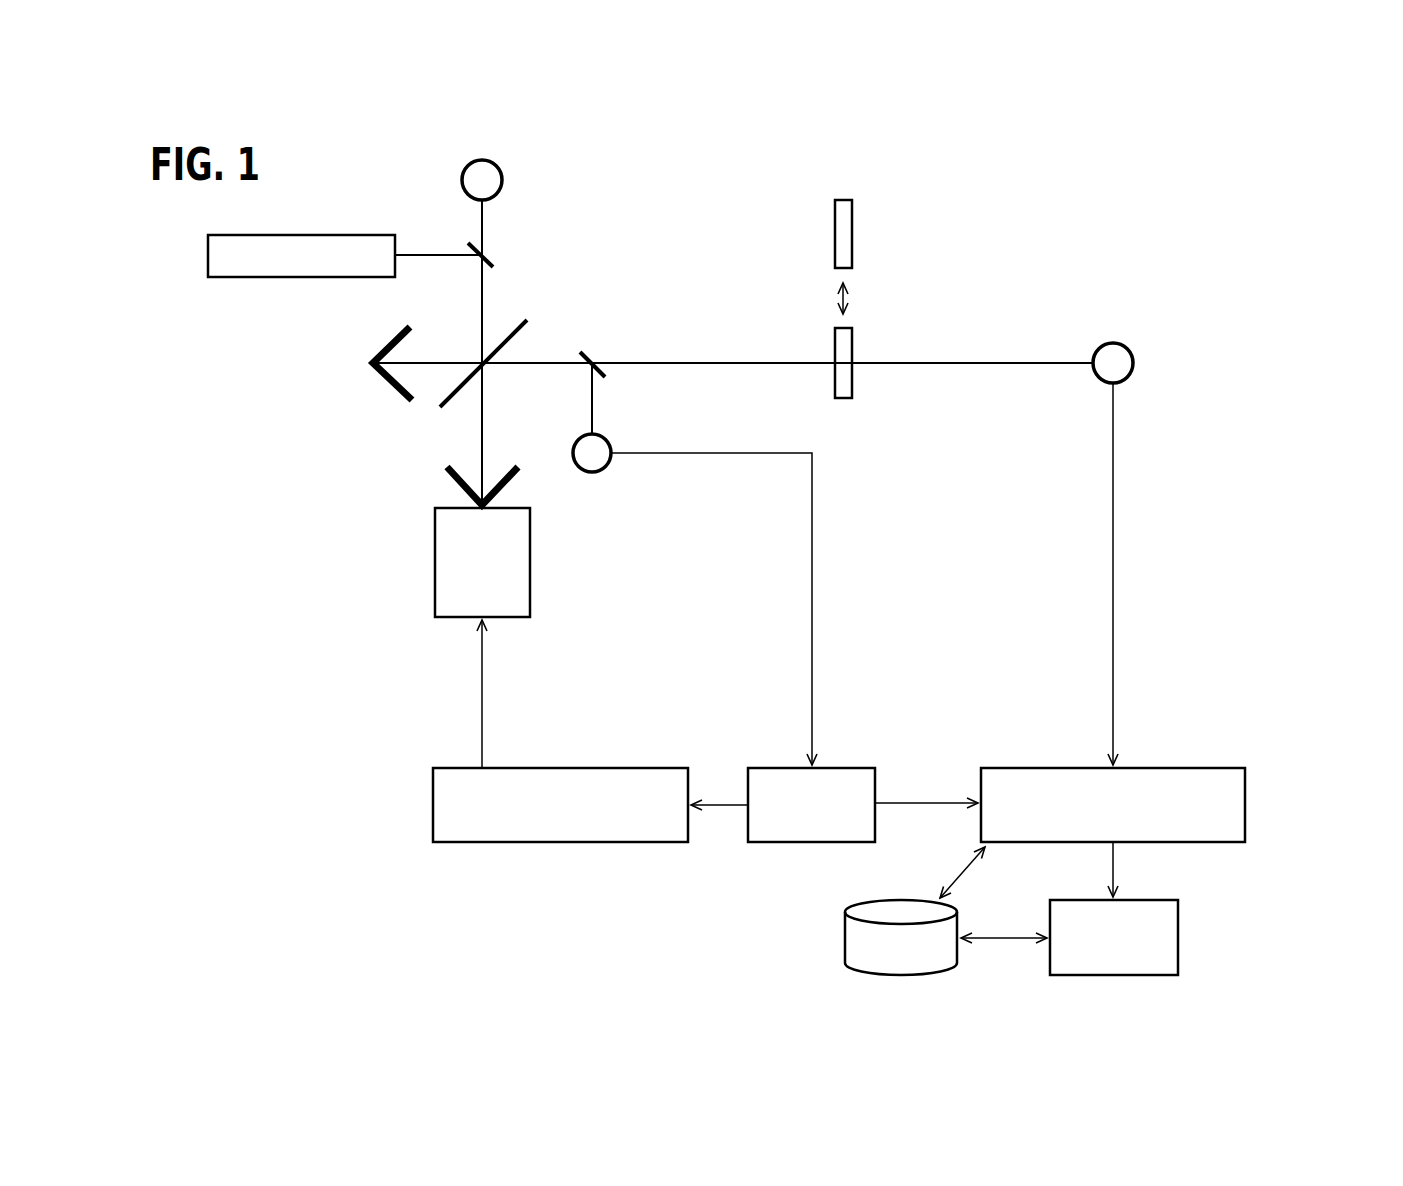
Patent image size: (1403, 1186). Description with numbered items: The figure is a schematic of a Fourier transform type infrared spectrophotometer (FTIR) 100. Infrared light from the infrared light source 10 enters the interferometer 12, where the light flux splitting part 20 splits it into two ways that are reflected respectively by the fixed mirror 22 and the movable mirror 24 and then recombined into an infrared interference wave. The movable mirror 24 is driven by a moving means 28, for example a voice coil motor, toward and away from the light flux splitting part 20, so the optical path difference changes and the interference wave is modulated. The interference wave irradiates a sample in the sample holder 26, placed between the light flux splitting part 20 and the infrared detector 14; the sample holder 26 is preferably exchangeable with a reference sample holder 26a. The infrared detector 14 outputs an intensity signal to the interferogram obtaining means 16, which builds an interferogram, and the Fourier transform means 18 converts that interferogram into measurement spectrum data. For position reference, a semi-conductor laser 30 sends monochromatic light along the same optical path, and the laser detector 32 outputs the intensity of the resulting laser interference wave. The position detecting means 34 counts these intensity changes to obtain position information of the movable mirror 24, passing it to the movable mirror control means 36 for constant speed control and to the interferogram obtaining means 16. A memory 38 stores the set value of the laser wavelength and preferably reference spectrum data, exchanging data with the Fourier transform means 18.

The infrared light source 10 is at (503, 178).
The interferometer 12 is at (415, 475).
The infrared detector 14 is at (1112, 341).
The interferogram obtaining means 16 is at (1210, 842).
The Fourier transform means 18 is at (1178, 938).
The light flux splitting part 20 is at (513, 318).
The fixed mirror 22 is at (398, 336).
The movable mirror 24 is at (450, 478).
The sample holder 26 is at (853, 345).
The reference sample holder 26a is at (853, 222).
The moving means 28 is at (435, 565).
The semi-conductor laser 30 is at (307, 217).
The laser detector 32 is at (610, 440).
The position detecting means 34 is at (812, 842).
The movable mirror control means 36 is at (433, 810).
The memory 38 is at (845, 942).
The Fourier transform type infrared spectrophotometer (FTIR) 100 is at (1107, 235).